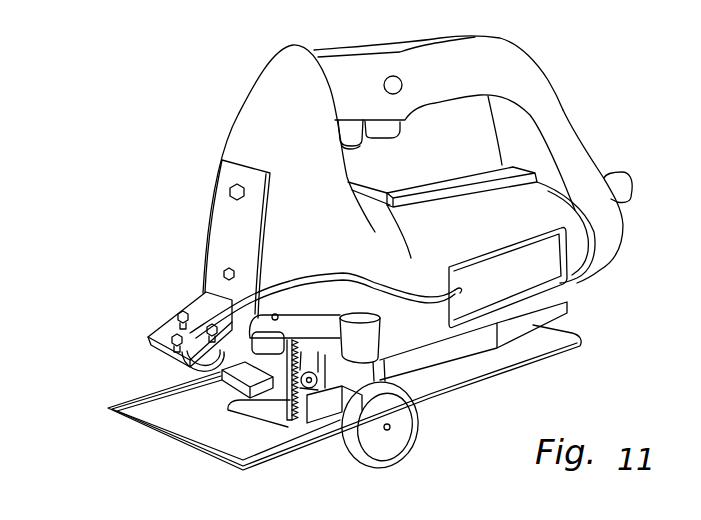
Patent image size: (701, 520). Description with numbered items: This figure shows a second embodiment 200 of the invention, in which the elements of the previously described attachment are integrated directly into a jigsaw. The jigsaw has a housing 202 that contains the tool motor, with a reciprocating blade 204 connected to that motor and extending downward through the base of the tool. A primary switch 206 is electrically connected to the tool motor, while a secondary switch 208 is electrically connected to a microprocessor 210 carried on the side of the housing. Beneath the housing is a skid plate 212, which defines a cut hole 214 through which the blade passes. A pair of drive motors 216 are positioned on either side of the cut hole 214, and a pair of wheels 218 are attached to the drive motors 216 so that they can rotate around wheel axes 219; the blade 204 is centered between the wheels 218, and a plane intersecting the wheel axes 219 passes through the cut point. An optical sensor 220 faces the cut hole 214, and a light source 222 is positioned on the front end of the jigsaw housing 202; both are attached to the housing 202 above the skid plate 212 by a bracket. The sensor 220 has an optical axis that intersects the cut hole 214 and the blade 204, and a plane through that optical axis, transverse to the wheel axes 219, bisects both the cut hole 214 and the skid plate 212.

The second embodiment 200 is at (143, 172).
The housing 202 is at (262, 98).
The reciprocating blade 204 is at (292, 405).
The primary switch 206 is at (351, 147).
The secondary switch 208 is at (405, 137).
The microprocessor 210 is at (491, 285).
The skid plate 212 is at (153, 412).
The cut hole 214 is at (258, 414).
The drive motors 216 is at (237, 370).
The wheels 218 is at (414, 433).
The wheel axes 219 is at (398, 430).
The optical sensor 220 is at (180, 358).
The light source 222 is at (259, 320).